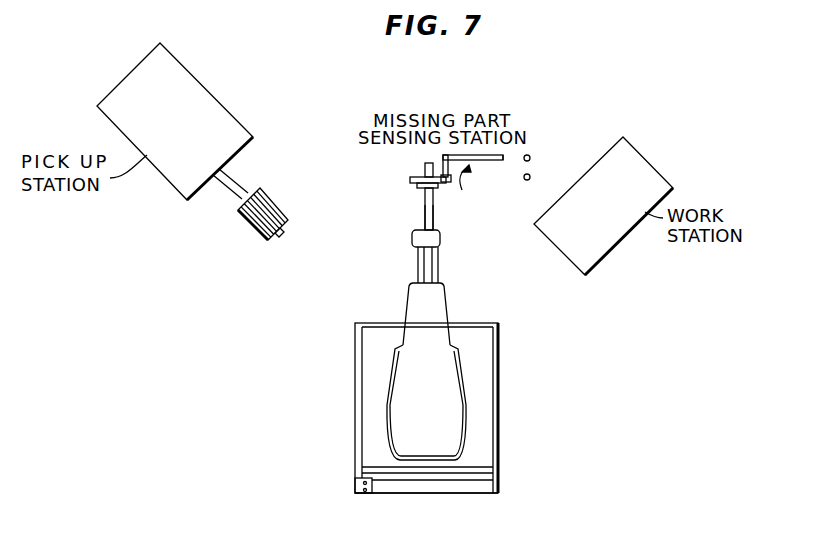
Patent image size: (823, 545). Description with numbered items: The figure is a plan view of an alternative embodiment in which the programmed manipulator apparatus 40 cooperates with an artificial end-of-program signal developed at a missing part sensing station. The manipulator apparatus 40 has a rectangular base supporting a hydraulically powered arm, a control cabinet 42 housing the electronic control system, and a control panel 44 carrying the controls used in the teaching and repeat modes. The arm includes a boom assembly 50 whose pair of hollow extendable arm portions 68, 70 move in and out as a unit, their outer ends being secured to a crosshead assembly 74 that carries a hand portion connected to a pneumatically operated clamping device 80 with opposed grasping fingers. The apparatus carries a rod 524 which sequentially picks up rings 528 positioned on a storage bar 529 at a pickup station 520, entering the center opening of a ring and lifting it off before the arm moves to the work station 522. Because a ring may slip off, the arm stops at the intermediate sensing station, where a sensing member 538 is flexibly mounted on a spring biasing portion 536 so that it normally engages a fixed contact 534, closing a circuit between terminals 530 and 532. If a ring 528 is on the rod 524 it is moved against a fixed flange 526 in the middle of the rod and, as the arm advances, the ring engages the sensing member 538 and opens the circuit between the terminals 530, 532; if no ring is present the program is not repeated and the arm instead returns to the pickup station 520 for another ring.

The manipulator apparatus 40 is at (502, 437).
The control cabinet 42 is at (478, 501).
The control panel 44 is at (437, 494).
The boom assembly 50 is at (449, 306).
The extendable arm portion 68 is at (417, 260).
The extendable arm portion 70 is at (440, 268).
The crosshead assembly 74 is at (442, 238).
The clamping device 80 is at (437, 213).
The pickup station 520 is at (223, 122).
The work station 522 is at (653, 180).
The rod 524 is at (425, 206).
The fixed flange 526 is at (410, 182).
The ring 528 is at (287, 213).
The storage bar 529 is at (237, 192).
The terminal 530 is at (531, 157).
The terminal 532 is at (524, 178).
The fixed contact 534 is at (483, 183).
The spring biasing portion 536 is at (506, 160).
The sensing member 538 is at (493, 153).